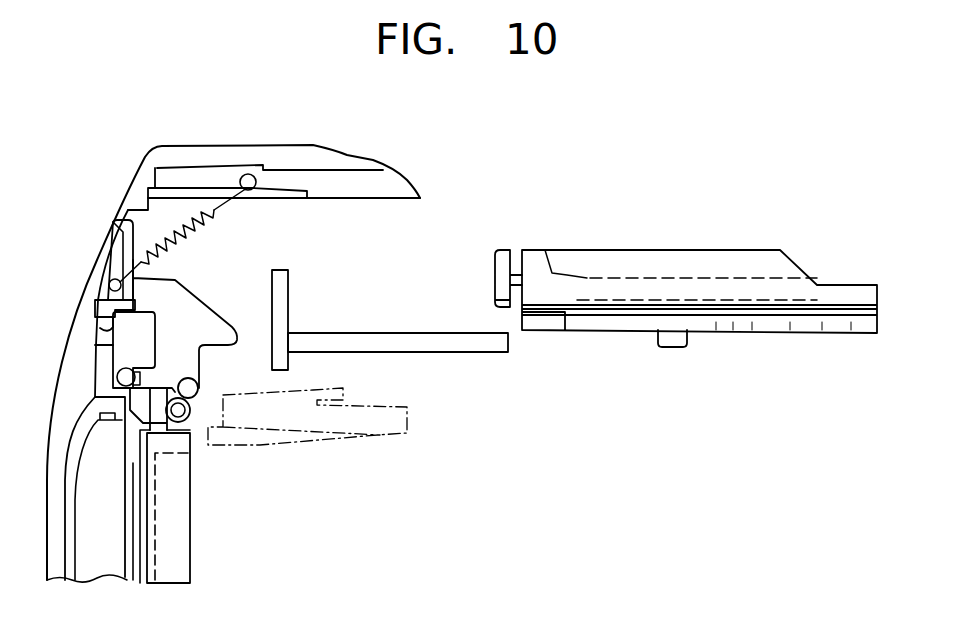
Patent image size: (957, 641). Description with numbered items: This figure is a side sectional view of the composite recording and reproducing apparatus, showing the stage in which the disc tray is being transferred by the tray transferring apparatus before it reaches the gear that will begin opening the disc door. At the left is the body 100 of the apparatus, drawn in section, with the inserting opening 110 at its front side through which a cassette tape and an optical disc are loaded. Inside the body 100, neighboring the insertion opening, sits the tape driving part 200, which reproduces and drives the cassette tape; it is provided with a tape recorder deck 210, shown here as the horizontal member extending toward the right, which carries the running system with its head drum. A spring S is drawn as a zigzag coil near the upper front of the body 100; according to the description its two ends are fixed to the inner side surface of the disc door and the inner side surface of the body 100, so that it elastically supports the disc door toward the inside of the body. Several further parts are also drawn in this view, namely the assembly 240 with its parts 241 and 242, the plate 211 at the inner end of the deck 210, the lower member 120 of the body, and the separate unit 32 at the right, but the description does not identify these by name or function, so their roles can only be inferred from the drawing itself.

The body 100 is at (145, 155).
The inserting opening 110 is at (98, 247).
The spring S is at (200, 208).
The tape driving part 200 is at (382, 240).
The cam slider assembly 240 is at (200, 297).
The roller 241 is at (193, 396).
The cam body 242 is at (236, 346).
The end plate 211 is at (288, 281).
The tape recorder deck 210 is at (372, 332).
The support column 120 is at (190, 553).
The cartridge holder 32 is at (797, 260).